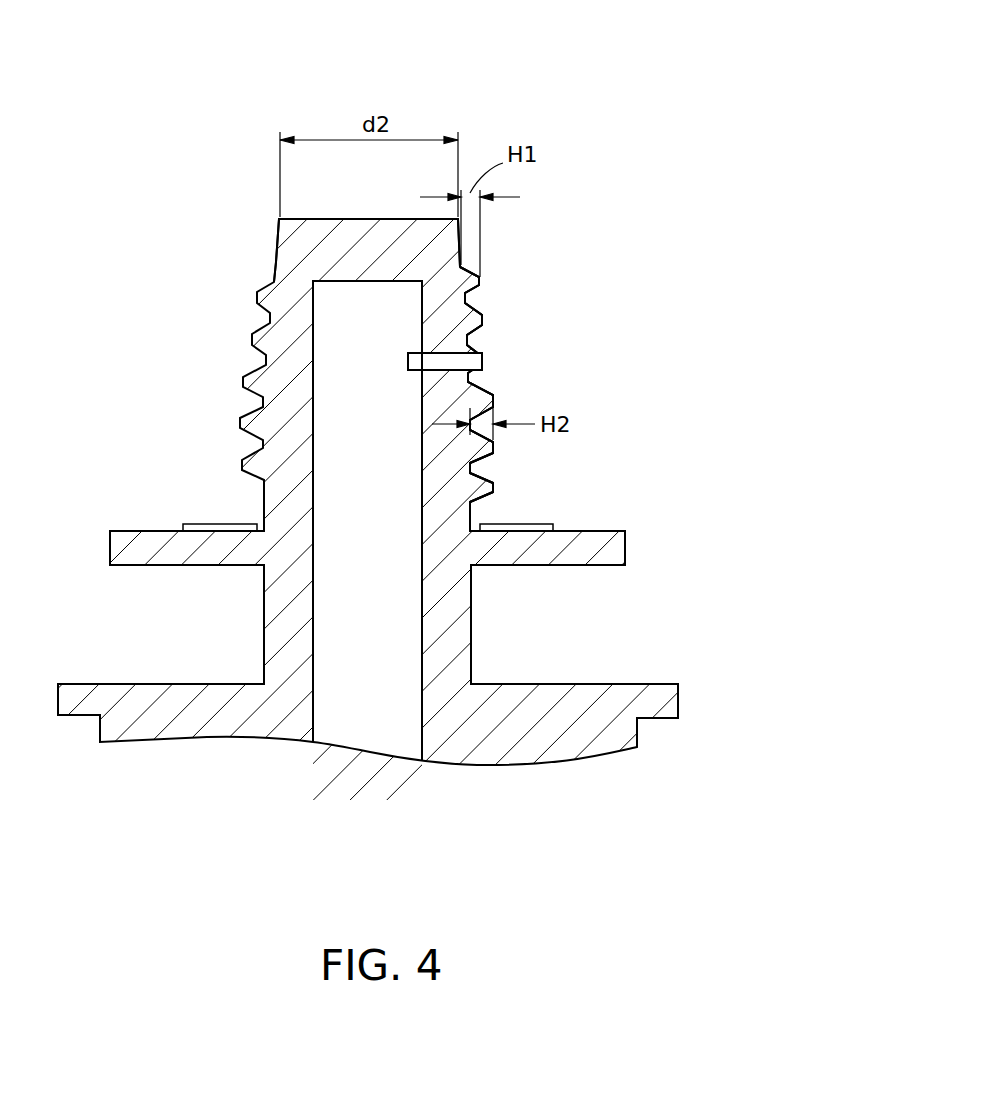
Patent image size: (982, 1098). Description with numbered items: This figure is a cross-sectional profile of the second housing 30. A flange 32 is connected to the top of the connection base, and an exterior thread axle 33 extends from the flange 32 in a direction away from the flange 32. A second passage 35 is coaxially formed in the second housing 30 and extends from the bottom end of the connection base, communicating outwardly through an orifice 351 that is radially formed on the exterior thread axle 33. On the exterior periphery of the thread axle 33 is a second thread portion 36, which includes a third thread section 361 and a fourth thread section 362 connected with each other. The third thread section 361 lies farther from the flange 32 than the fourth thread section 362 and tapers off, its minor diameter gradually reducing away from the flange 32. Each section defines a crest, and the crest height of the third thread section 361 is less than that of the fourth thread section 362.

The second housing 30 is at (607, 105).
The exterior thread axle 33 is at (325, 230).
The second thread portion 36 is at (665, 288).
The third thread section 361 is at (481, 322).
The fourth thread section 362 is at (494, 452).
The orifice 351 is at (455, 357).
The flange 32 is at (598, 543).
The second passage 35 is at (358, 720).